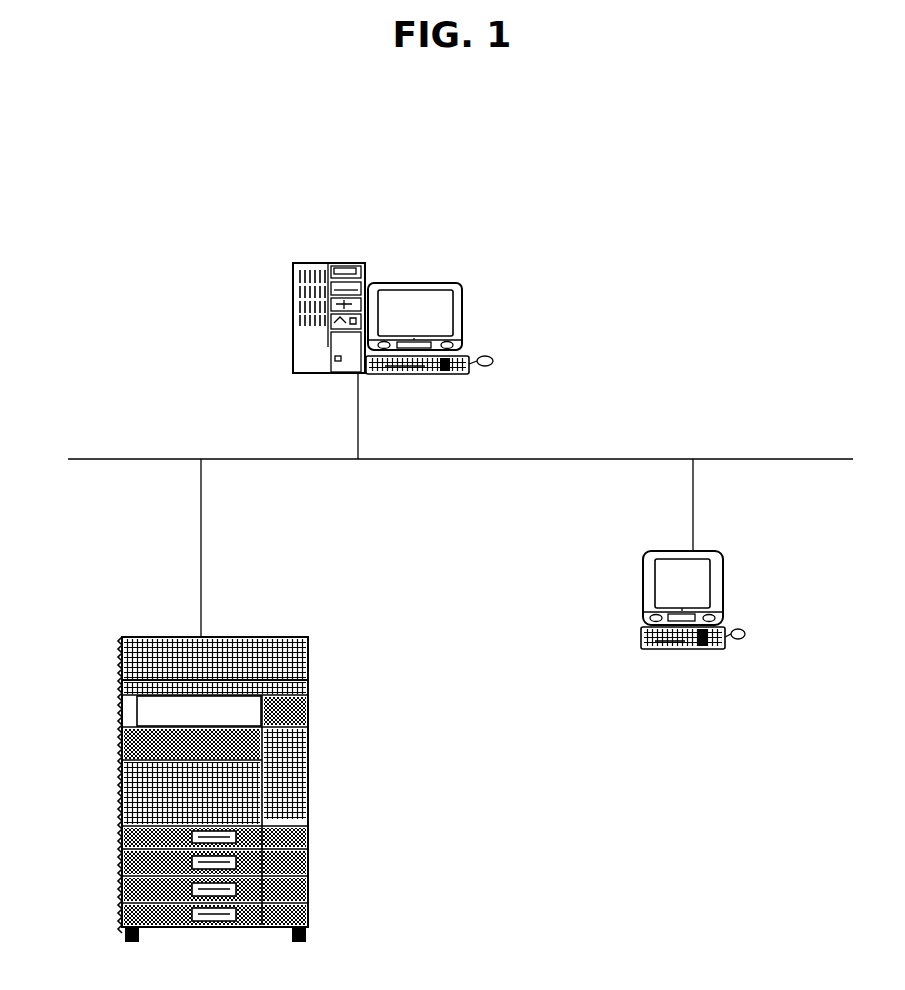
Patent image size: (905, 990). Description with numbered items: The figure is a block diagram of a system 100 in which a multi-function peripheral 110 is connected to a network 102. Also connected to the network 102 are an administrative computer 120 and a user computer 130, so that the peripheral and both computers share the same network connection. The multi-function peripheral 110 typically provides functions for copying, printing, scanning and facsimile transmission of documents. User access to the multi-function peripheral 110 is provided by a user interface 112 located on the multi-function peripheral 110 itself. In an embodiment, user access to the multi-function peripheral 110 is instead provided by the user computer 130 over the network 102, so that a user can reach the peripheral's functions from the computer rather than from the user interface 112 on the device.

The system 100 is at (682, 206).
The network 102 is at (584, 459).
The multi-function peripheral 110 is at (263, 637).
The user interface 112 is at (122, 688).
The administrative computer 120 is at (293, 348).
The user computer 130 is at (641, 640).